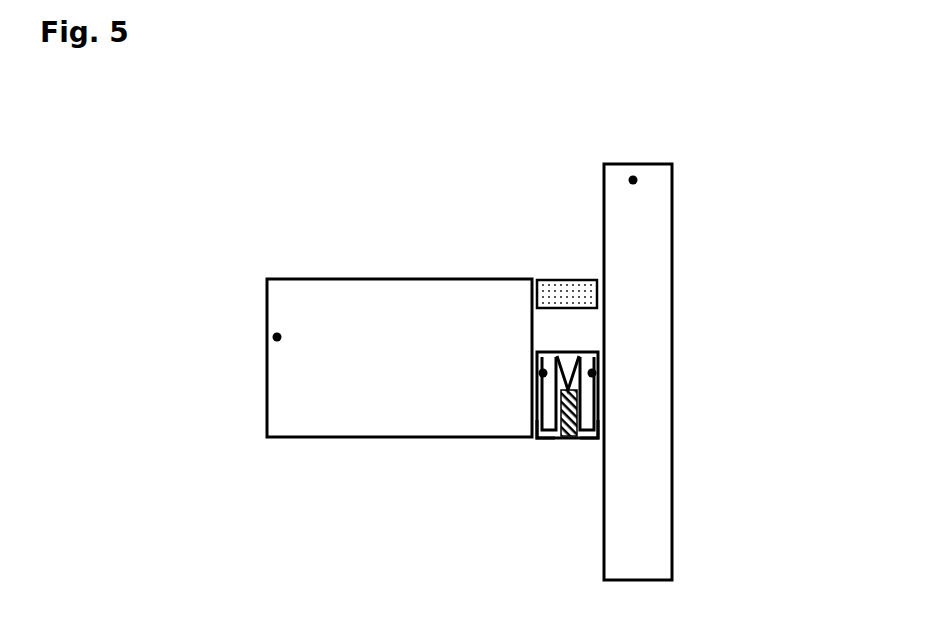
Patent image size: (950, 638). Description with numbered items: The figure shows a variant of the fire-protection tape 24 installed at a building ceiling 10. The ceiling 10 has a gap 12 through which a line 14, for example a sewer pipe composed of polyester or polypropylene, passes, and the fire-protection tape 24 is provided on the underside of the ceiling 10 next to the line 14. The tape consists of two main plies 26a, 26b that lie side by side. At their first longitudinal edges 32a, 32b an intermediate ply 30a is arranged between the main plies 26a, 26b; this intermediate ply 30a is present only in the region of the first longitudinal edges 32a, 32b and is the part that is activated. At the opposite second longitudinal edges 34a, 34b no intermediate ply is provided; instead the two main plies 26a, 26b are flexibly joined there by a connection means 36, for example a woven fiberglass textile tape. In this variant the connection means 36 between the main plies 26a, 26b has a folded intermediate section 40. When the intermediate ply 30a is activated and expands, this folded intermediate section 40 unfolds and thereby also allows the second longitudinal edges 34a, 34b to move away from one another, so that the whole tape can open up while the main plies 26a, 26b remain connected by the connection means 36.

The ceiling 10 is at (277, 337).
The gap 12 is at (562, 186).
The line 14 is at (633, 180).
The fire-protection tape 24 is at (550, 471).
The main ply 26a is at (543, 373).
The main ply 26b is at (592, 373).
The intermediate ply 30a is at (565, 438).
The first longitudinal edge 32a is at (547, 438).
The first longitudinal edge 32b is at (598, 438).
The second longitudinal edge 34a is at (538, 352).
The second longitudinal edge 34b is at (597, 352).
The connection means 36 is at (594, 413).
The folded intermediate section 40 is at (568, 369).